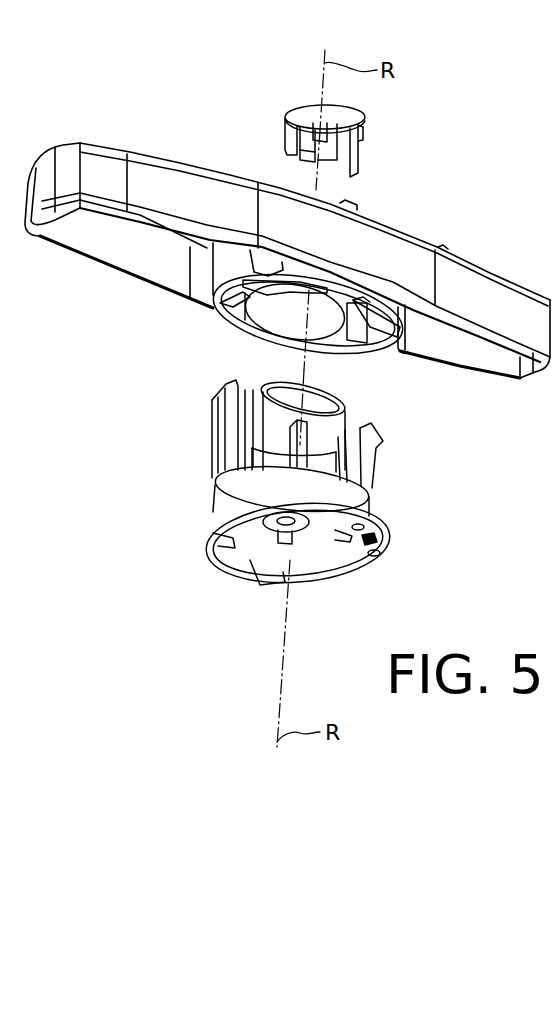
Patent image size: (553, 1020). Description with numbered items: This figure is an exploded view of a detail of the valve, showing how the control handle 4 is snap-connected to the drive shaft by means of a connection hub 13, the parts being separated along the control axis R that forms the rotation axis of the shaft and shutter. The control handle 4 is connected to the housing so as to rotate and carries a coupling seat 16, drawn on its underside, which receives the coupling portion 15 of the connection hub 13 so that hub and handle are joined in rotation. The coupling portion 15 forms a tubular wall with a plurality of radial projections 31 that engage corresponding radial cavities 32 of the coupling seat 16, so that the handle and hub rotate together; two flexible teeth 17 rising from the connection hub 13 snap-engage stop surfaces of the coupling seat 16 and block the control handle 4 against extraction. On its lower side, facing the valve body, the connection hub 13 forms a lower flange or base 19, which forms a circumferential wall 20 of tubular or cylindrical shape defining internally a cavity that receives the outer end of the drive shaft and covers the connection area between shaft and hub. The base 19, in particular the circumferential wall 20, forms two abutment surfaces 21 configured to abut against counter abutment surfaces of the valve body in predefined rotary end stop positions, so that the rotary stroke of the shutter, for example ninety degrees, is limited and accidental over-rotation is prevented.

The control handle 4 is at (467, 280).
The connection hub 13 is at (392, 490).
The coupling portion 15 is at (333, 410).
The coupling seat 16 is at (335, 322).
The flexible teeth 17 is at (220, 450).
The lower flange or base 19 is at (240, 540).
The circumferential wall 20 is at (320, 570).
The abutment surfaces 21 is at (270, 573).
The radial projections 31 is at (253, 413).
The radial cavities 32 is at (233, 308).